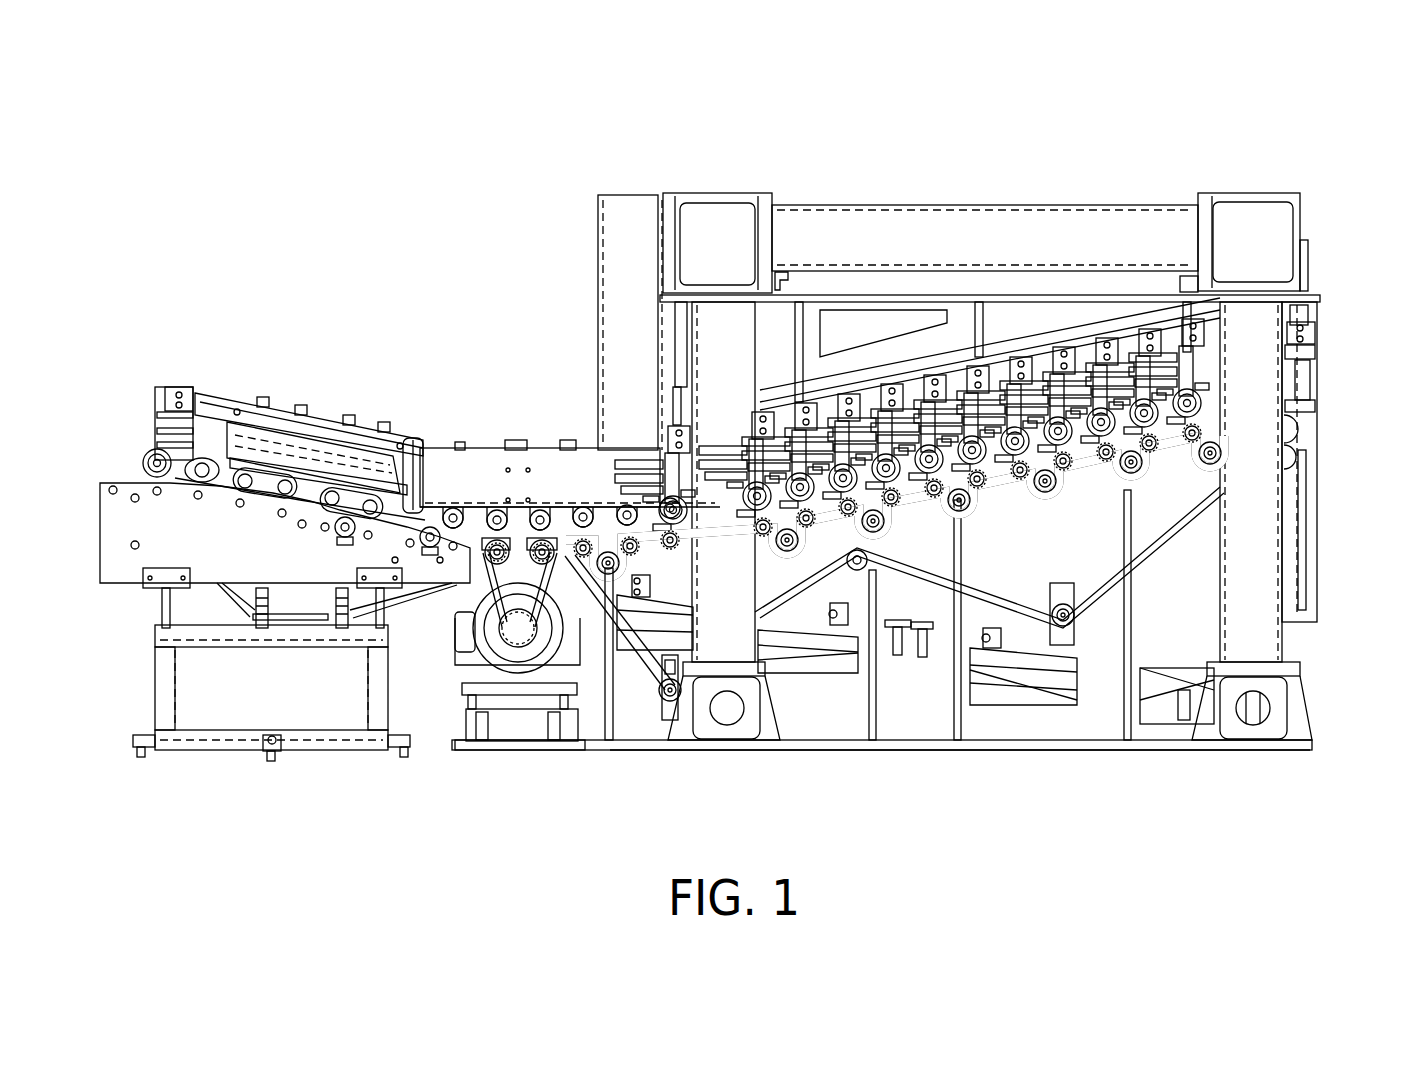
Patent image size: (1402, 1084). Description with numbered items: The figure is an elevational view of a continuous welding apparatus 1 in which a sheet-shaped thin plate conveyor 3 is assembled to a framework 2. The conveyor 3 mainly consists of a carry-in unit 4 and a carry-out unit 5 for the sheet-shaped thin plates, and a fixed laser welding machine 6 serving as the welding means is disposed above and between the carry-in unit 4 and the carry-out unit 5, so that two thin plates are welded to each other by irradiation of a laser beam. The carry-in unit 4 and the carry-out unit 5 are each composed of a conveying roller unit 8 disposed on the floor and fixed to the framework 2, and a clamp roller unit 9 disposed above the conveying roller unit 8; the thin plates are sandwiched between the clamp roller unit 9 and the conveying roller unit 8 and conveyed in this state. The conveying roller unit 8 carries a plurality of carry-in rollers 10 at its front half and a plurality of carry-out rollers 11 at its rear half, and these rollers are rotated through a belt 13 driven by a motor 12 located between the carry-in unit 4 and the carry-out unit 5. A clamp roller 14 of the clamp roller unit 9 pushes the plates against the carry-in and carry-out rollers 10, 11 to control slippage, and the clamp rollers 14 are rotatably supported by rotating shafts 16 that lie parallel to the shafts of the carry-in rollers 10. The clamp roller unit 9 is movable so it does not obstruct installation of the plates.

The continuous welding apparatus 1 is at (856, 150).
The framework 2 is at (980, 205).
The sheet-shaped thin plate conveyor 3 is at (912, 690).
The carry-in unit 4 is at (1160, 515).
The carry-out unit 5 is at (127, 452).
The laser welding machine 6 is at (517, 432).
The conveying roller unit 8 is at (1222, 485).
The clamp roller unit 9 is at (1318, 328).
The carry-in rollers 10 is at (1060, 455).
The carry-out rollers 11 is at (103, 483).
The motor 12 is at (524, 660).
The belt 13 is at (630, 690).
The clamp roller 14 is at (1215, 400).
The rotating shafts 16 is at (1085, 330).